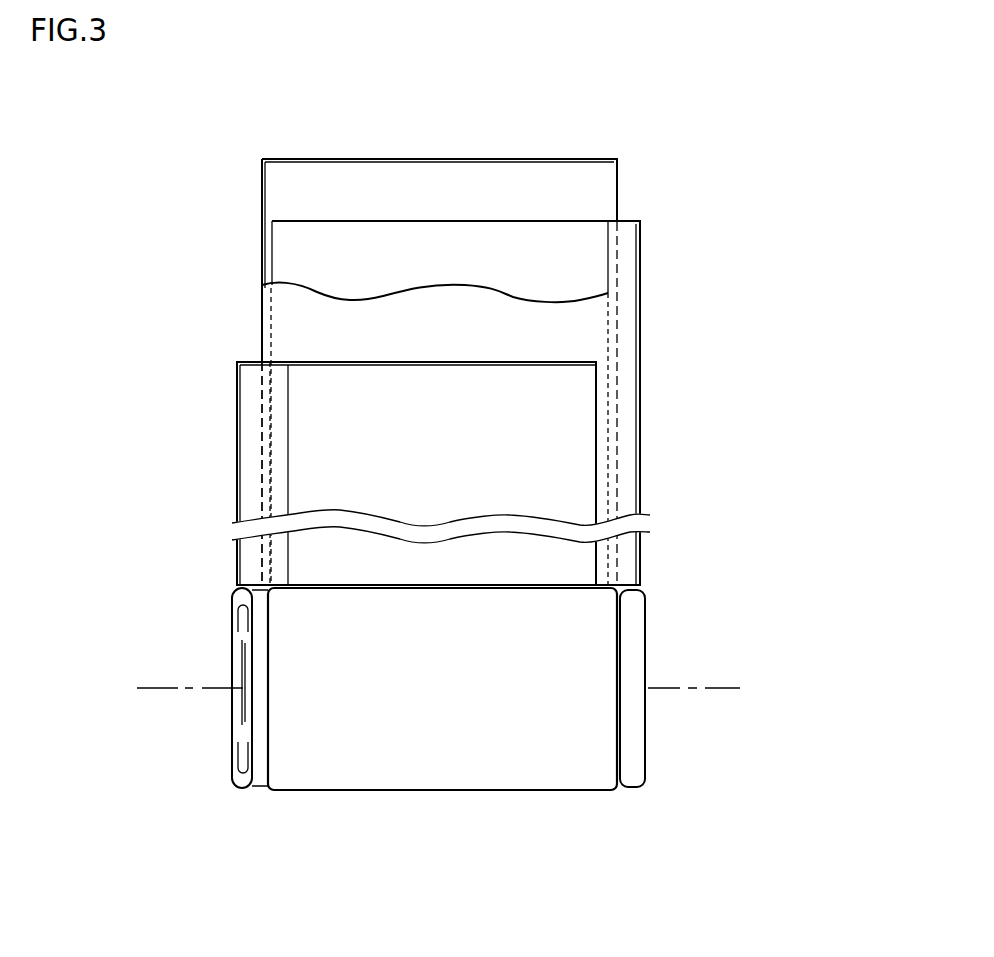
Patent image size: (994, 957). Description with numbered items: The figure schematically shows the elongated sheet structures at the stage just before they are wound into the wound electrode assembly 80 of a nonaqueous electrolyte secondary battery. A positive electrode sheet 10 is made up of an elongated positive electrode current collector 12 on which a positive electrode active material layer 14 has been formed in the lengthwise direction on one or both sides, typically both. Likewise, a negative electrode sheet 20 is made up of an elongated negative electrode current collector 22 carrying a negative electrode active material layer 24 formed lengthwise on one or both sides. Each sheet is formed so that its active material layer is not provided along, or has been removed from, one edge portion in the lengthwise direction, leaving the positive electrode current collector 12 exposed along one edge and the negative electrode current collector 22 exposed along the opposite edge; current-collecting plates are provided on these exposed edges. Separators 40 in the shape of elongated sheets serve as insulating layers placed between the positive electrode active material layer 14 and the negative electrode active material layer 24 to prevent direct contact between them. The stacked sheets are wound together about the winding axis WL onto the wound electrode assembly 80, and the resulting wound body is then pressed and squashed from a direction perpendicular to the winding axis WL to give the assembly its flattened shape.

The positive electrode sheet 10 is at (353, 473).
The positive electrode current collector 12 is at (253, 488).
The positive electrode active material layer 14 is at (323, 467).
The negative electrode sheet 20 is at (512, 352).
The negative electrode current collector 22 is at (627, 282).
The negative electrode active material layer 24 is at (537, 238).
The separator 40 is at (280, 187).
The wound electrode assembly 80 is at (478, 762).
The winding axis WL is at (728, 688).